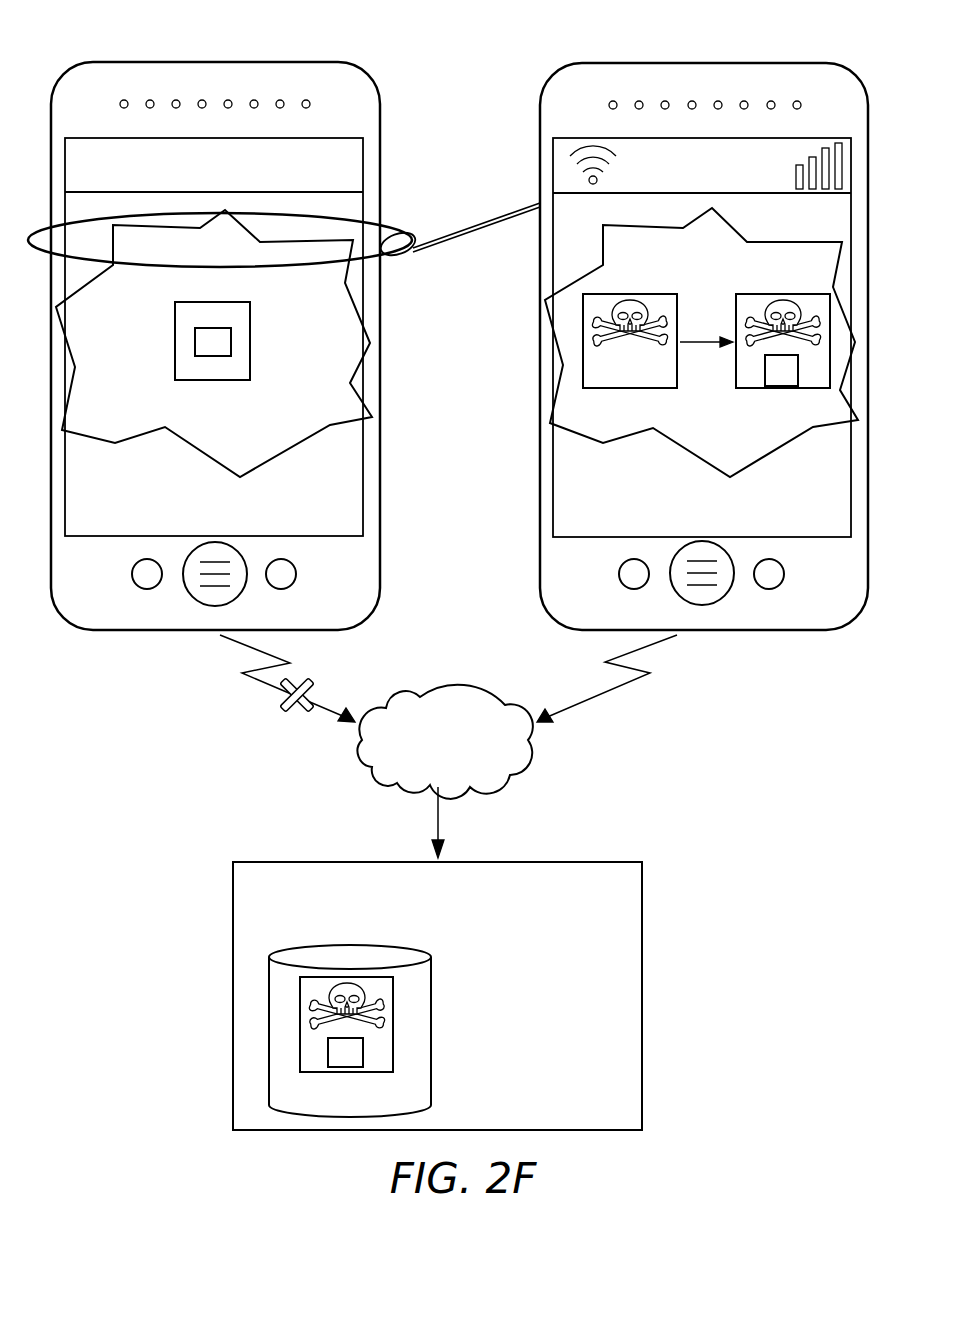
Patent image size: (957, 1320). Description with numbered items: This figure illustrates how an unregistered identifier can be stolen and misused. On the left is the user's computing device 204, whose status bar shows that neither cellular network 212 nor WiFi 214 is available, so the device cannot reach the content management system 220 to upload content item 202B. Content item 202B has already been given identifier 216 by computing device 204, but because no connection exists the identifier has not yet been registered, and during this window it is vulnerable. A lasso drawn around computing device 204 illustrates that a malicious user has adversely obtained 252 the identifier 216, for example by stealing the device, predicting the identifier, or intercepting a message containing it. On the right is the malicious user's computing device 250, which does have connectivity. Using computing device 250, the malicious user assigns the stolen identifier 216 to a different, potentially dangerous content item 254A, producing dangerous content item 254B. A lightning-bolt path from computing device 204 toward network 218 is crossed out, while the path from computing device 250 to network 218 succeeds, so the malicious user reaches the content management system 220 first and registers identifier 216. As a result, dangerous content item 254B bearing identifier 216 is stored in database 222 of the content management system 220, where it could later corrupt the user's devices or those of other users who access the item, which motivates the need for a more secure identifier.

The computing device 204 is at (216, 62).
The WiFi 214 is at (93, 148).
The cellular network 212 is at (307, 147).
The content item 202B is at (213, 303).
The identifier 216 is at (211, 355).
The adversely obtained identifier 252 is at (468, 232).
The computing device 250 is at (702, 62).
The potentially dangerous content item 254A is at (584, 364).
The dangerous content item 254B is at (790, 294).
The network 218 is at (432, 766).
The content management system 220 is at (427, 934).
The database 222 is at (334, 1102).